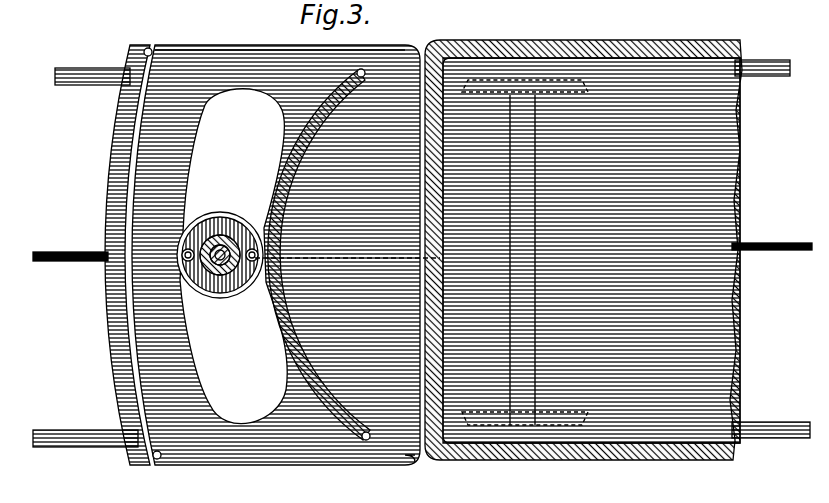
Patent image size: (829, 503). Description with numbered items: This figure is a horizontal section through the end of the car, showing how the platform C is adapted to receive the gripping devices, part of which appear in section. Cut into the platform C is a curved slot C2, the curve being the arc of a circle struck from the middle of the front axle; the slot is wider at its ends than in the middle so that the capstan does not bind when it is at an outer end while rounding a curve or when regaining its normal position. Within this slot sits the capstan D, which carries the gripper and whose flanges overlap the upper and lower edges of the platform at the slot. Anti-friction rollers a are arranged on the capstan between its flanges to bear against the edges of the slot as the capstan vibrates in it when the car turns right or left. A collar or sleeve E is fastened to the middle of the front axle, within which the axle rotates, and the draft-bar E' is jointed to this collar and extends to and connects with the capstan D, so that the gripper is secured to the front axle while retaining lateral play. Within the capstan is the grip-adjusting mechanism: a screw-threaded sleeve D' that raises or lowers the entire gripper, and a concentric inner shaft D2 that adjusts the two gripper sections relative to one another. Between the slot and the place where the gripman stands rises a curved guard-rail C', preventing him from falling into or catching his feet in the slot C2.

The platform C is at (276, 255).
The curved guard-rail C' is at (319, 254).
The curved slot C2 is at (233, 256).
The capstan D is at (220, 271).
The sleeve D' is at (236, 224).
The inner shaft D2 is at (217, 215).
The anti-friction rollers a is at (182, 255).
The collar or sleeve E is at (583, 250).
The draft-bar E' is at (347, 242).